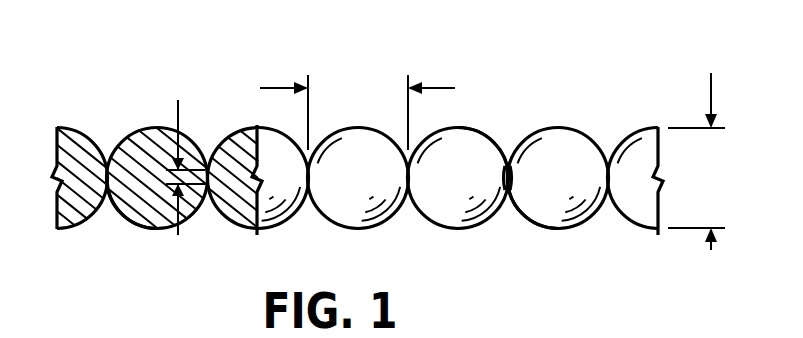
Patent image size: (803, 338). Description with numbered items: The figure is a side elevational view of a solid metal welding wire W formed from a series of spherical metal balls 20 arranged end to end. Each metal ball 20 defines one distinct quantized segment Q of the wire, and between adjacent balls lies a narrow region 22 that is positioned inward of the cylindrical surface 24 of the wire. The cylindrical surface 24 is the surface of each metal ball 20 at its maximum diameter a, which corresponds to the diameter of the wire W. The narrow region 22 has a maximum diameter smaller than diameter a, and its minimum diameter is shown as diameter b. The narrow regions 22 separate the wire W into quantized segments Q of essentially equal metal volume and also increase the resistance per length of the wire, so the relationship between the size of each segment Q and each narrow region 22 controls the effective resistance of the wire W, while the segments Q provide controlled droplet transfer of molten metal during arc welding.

The spherical metal ball 20 is at (466, 215).
The narrow region 22 is at (507, 148).
The cylindrical surface 24 is at (152, 127).
The welding wire W is at (126, 223).
The maximum diameter a is at (696, 161).
The minimum diameter of the narrow region b is at (185, 152).
The quantized segment Q is at (357, 111).